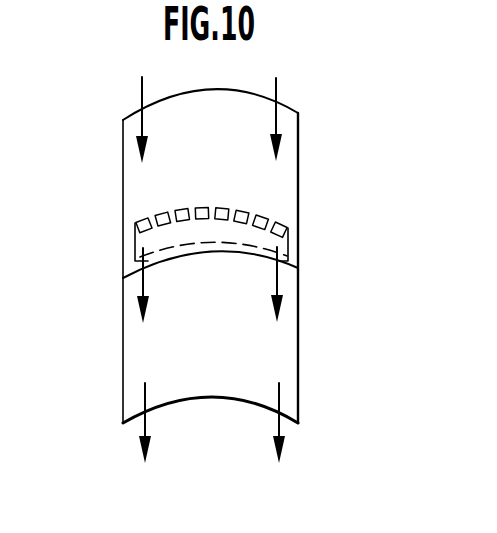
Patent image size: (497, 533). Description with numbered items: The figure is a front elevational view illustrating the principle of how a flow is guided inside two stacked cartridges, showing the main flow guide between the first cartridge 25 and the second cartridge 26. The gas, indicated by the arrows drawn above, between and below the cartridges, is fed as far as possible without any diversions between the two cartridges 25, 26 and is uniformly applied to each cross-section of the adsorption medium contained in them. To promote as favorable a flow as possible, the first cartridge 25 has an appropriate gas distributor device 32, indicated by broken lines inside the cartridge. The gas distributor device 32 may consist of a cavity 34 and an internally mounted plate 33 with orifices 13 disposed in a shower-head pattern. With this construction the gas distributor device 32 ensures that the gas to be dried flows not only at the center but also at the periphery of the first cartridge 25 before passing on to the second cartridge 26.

The orifices 13 is at (213, 200).
The first cartridge 25 is at (140, 188).
The second cartridge 26 is at (137, 353).
The gas distributor device 32 is at (264, 232).
The internally mounted plate 33 is at (243, 213).
The cavity 34 is at (287, 249).